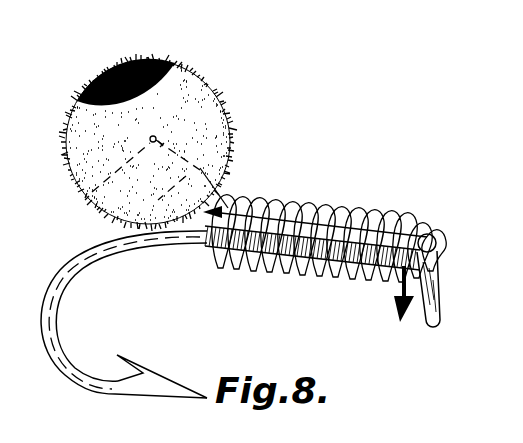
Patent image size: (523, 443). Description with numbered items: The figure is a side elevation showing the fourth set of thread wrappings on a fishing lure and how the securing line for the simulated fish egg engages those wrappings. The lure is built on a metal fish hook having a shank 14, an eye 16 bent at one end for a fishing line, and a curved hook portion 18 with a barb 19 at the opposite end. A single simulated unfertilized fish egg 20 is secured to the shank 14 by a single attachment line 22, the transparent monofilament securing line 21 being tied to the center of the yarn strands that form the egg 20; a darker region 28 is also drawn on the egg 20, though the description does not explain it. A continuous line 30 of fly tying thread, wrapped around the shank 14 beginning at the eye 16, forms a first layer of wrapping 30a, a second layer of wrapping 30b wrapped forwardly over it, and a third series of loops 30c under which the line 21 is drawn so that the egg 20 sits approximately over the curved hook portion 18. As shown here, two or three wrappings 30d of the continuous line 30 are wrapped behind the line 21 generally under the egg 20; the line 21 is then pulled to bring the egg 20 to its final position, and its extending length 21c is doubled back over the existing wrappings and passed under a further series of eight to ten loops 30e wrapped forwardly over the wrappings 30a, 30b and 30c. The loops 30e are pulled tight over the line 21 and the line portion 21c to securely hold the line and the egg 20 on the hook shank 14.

The shank 14 is at (152, 247).
The eye 16 is at (428, 328).
The curved hook portion 18 is at (54, 342).
The barb 19 is at (146, 374).
The simulated unfertilized fish egg 20 is at (186, 113).
The securing line 21 is at (160, 177).
The extending length of line 21c is at (345, 214).
The attachment line 22 is at (88, 187).
The attractant patch 28 is at (143, 60).
The continuous line 30 is at (310, 264).
The first layer of wrapping 30a is at (325, 210).
The second layer of wrapping 30b is at (357, 213).
The third series of loops 30c is at (386, 214).
The wrappings behind line 30d is at (219, 254).
The series of loops 30e is at (282, 202).